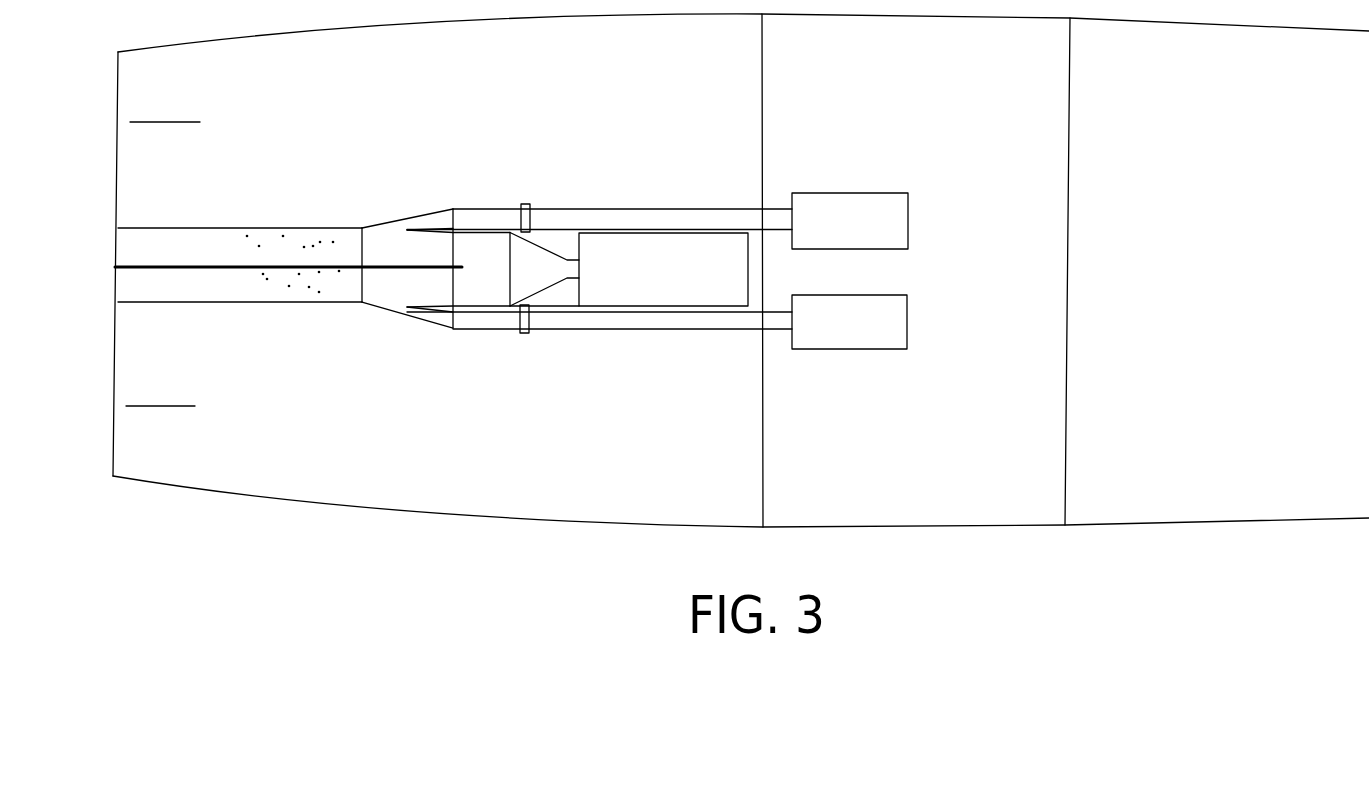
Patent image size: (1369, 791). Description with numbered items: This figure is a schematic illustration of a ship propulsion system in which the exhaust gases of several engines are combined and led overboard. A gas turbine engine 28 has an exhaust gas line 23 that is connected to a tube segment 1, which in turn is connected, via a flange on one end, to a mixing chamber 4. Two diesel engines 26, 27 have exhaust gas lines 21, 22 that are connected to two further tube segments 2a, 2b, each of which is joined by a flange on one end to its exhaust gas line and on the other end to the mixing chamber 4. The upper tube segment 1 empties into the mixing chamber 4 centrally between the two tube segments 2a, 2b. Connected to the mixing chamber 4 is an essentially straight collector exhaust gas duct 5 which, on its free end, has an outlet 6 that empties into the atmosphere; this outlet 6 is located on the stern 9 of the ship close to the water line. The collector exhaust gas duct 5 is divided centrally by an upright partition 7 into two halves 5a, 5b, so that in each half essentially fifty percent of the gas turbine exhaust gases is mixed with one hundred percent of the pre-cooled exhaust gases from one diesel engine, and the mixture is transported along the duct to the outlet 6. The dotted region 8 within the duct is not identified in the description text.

The tube segment 1 is at (498, 247).
The tube segment 2a is at (478, 322).
The tube segment 2b is at (467, 217).
The mixing chamber 4 is at (383, 232).
The collector exhaust gas duct 5 is at (240, 234).
The duct half 5a is at (217, 295).
The duct half 5b is at (194, 233).
The outlet 6 is at (112, 277).
The upright partition 7 is at (168, 268).
The particles 8 is at (305, 238).
The stern 9 is at (112, 462).
The exhaust gas line 21 is at (586, 210).
The exhaust gas line 22 is at (682, 323).
The exhaust gas line 23 is at (575, 270).
The diesel engine 26 is at (848, 193).
The diesel engine 27 is at (857, 351).
The gas turbine engine 28 is at (677, 240).